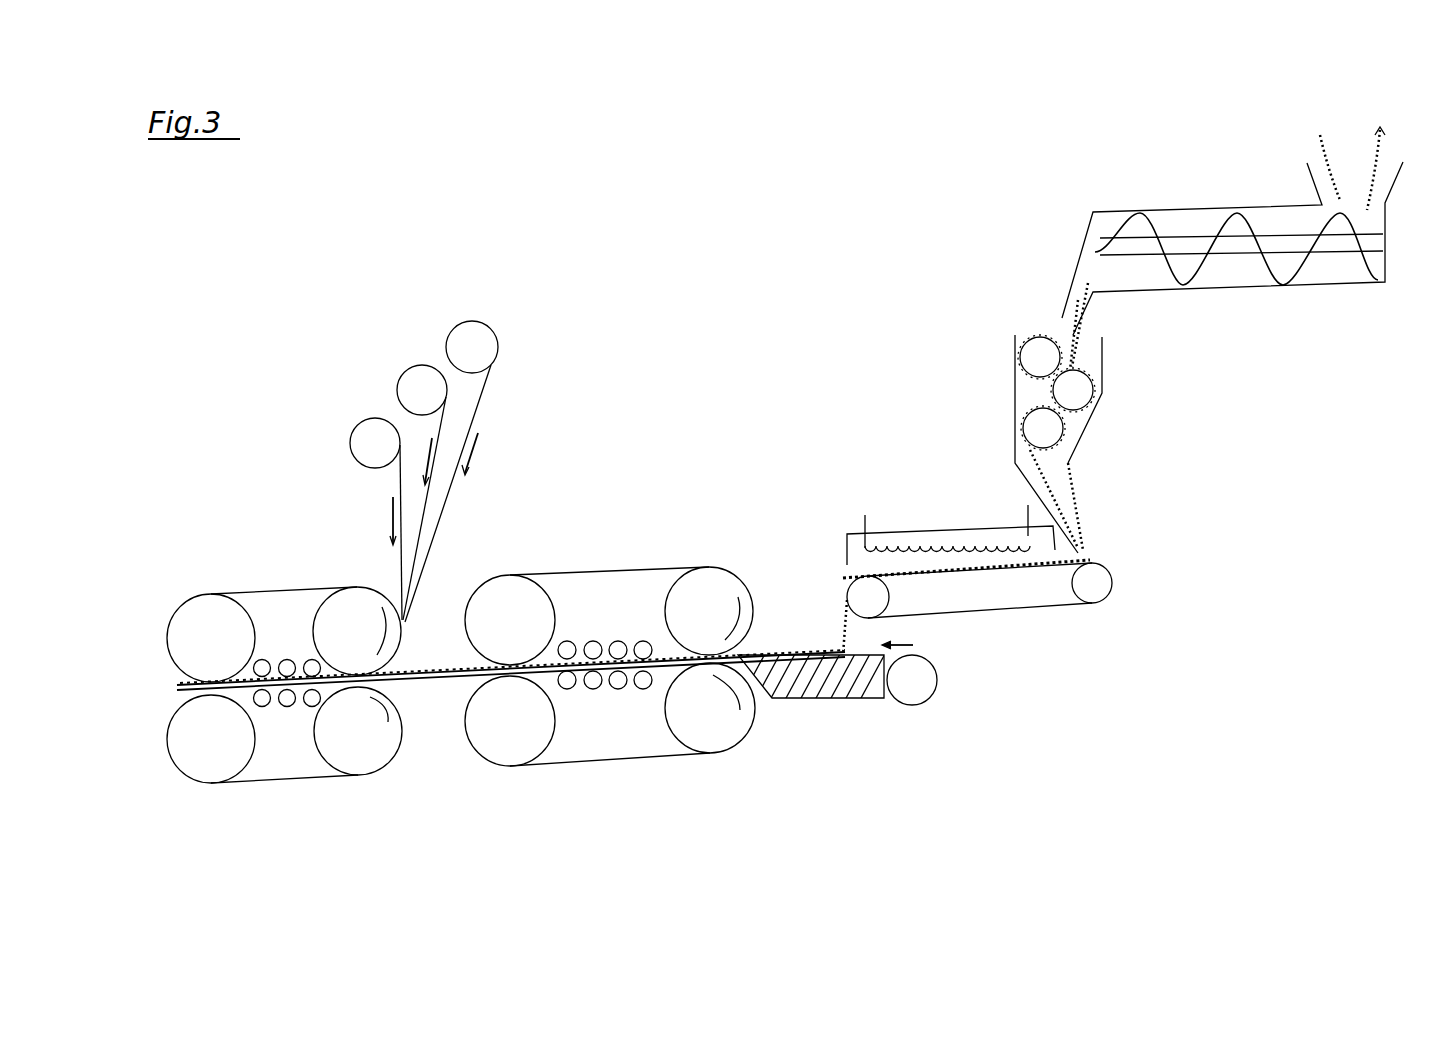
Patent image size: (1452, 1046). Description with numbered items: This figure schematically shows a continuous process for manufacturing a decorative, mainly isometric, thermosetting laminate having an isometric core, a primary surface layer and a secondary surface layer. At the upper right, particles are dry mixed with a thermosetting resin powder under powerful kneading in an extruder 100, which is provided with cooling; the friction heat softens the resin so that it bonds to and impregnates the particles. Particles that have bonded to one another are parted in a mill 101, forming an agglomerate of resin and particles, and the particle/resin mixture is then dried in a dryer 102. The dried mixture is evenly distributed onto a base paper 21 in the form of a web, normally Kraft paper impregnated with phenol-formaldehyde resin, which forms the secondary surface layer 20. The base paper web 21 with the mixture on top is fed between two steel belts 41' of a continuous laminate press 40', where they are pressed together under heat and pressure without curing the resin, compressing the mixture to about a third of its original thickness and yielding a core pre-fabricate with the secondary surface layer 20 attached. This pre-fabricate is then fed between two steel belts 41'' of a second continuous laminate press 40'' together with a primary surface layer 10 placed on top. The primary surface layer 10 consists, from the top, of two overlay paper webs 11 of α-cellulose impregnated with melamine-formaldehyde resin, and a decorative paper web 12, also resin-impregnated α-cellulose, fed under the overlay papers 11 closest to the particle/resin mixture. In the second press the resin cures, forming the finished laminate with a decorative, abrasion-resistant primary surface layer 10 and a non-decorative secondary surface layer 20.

The primary surface layer 10 is at (470, 208).
The overlay paper 11 is at (364, 418).
The decorative paper 12 is at (458, 320).
The secondary surface layer 20 is at (1040, 657).
The base paper 21 is at (922, 650).
The second continuous laminate press 40'' is at (284, 692).
The steel belts 41'' is at (284, 692).
The continuous laminate press 40' is at (610, 675).
The steel belts 41' is at (610, 675).
The extruder 100 is at (1328, 273).
The mill 101 is at (1102, 395).
The dryer 102 is at (1103, 572).